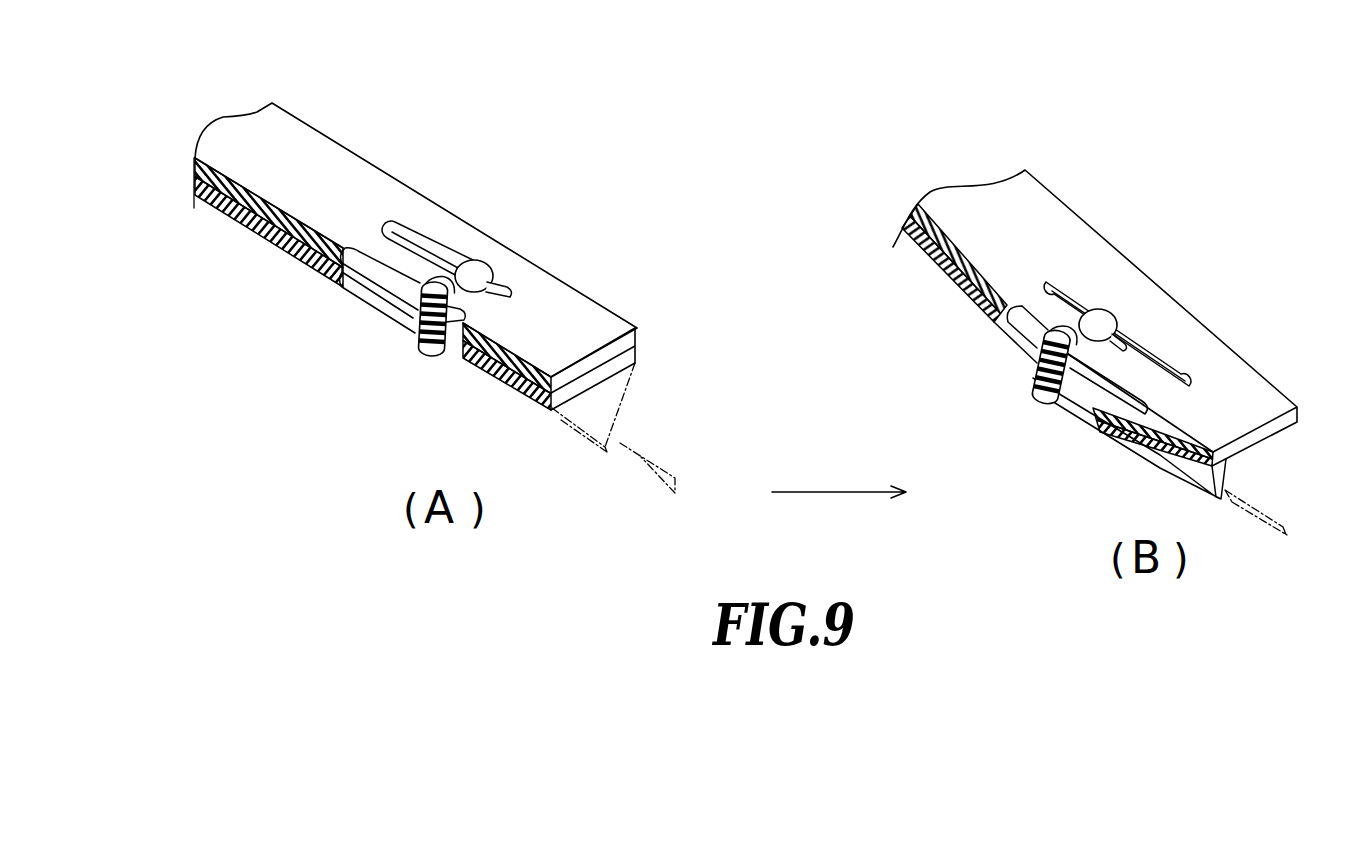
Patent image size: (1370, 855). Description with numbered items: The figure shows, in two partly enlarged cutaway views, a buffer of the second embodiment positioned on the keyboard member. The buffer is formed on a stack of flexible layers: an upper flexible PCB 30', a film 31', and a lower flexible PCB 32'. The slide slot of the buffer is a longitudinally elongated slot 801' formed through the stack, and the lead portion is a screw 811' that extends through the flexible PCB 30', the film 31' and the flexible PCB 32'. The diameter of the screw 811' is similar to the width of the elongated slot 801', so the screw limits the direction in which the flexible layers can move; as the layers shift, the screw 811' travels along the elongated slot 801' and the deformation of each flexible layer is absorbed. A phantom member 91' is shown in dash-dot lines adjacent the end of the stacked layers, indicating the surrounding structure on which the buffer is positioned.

In FIG. 9A, the flexible PCB 30' is at (415, 240).
In FIG. 9B, the flexible PCB 30' is at (1095, 290).
In FIG. 9A, the film 31' is at (365, 276).
In FIG. 9B, the film 31' is at (1033, 331).
In FIG. 9A, the flexible PCB 32' is at (373, 294).
In FIG. 9B, the flexible PCB 32' is at (1064, 357).
In FIG. 9A, the elongated slot 801' is at (411, 227).
In FIG. 9B, the elongated slot 801' is at (1099, 298).
In FIG. 9A, the screw 811' is at (527, 256).
In FIG. 9B, the screw 811' is at (1160, 328).
In FIG. 9A, the mating connector housing 91' is at (646, 427).
In FIG. 9B, the mating connector housing 91' is at (1292, 476).